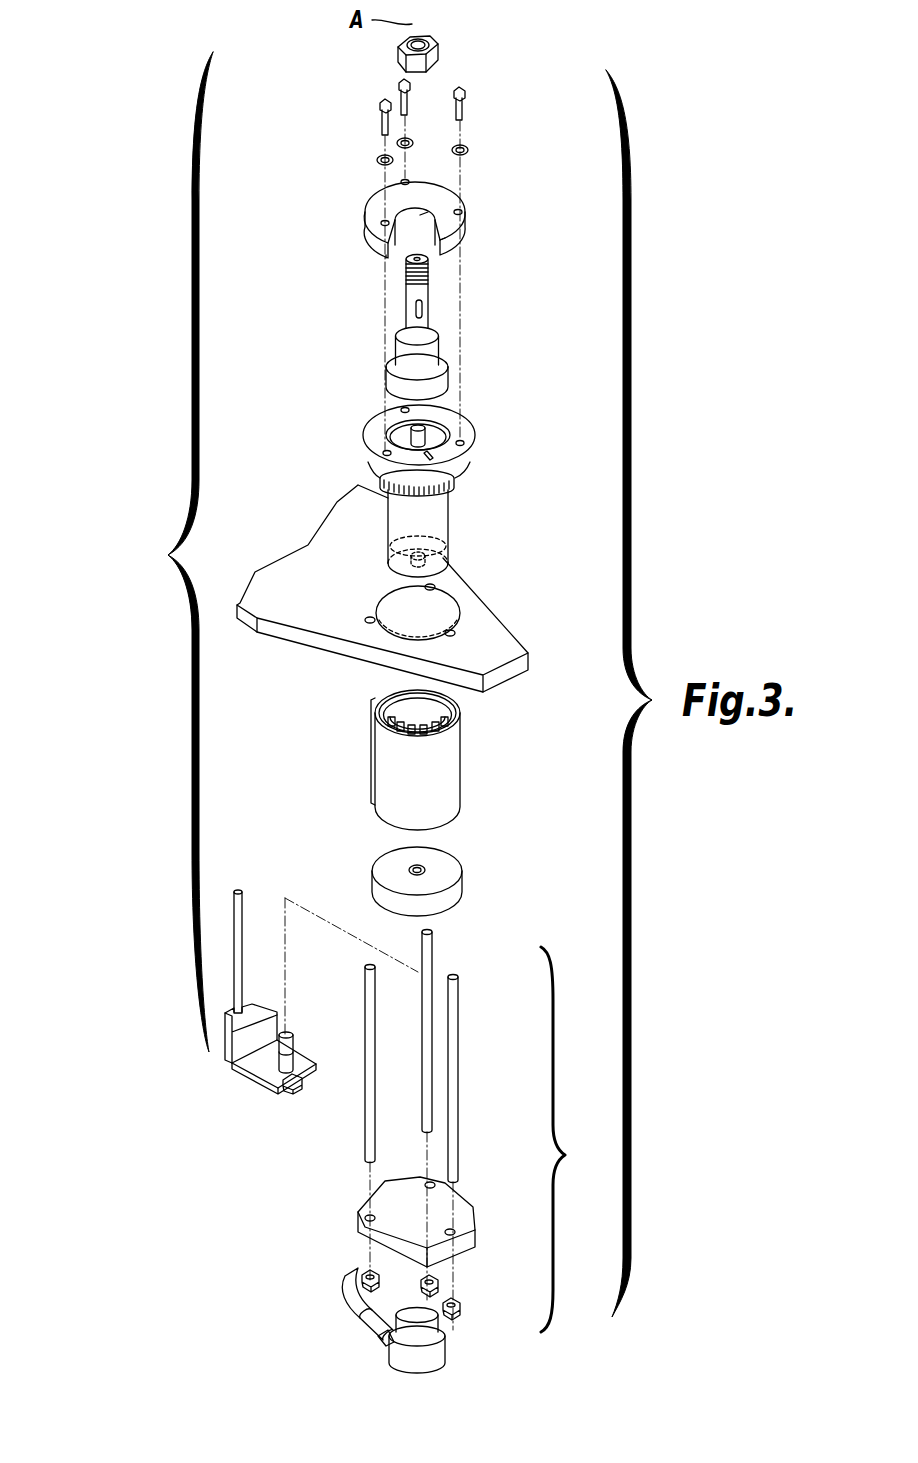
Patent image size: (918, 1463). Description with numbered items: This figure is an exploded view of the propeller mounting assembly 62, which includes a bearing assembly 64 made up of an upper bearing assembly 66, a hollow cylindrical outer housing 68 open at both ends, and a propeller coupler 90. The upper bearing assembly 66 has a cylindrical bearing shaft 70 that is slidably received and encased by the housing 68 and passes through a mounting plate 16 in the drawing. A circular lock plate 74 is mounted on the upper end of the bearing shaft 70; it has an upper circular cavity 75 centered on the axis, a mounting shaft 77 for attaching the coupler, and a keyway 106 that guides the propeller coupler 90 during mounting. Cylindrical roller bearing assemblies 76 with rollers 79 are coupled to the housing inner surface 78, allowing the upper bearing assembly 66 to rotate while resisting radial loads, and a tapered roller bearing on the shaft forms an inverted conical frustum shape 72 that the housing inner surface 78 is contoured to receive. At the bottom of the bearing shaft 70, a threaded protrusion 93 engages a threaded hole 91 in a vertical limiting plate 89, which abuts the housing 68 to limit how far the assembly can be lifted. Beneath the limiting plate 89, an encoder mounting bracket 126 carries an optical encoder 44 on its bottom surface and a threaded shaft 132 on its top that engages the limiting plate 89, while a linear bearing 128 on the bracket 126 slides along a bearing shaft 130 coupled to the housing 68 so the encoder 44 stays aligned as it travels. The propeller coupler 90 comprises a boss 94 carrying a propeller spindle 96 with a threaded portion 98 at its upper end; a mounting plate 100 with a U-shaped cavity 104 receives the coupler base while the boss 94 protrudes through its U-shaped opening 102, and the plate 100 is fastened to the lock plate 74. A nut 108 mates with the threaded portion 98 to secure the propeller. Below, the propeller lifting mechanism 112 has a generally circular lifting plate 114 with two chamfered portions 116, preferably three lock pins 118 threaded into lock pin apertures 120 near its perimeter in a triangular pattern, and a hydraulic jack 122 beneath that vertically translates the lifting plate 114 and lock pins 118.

The mounting plate 16 is at (485, 623).
The optical encoder 44 is at (295, 1090).
The propeller mounting assembly 62 is at (163, 125).
The bearing assembly 64 is at (176, 552).
The upper bearing assembly 66 is at (460, 478).
The outer housing 68 is at (416, 743).
The bearing shaft 70 is at (455, 533).
The conical frustum shape 72 is at (378, 481).
The lock plate 74 is at (406, 430).
The upper circular cavity 75 is at (410, 434).
The cylindrical roller bearing assembly 76 is at (418, 718).
The mounting shaft 77 is at (424, 430).
The housing inner surface 78 is at (374, 695).
The rollers 79 is at (447, 705).
The vertical limiting plate 89 is at (409, 866).
The propeller coupler 90 is at (455, 344).
The threaded hole 91 is at (425, 869).
The threaded protrusion 93 is at (428, 560).
The boss 94 is at (405, 348).
The propeller spindle 96 is at (361, 285).
The threaded portion 98 is at (409, 272).
The mounting plate 100 is at (378, 197).
The U-shaped opening 102 is at (432, 216).
The U-shaped cavity 104 is at (450, 245).
The keyway 106 is at (434, 457).
The nut 108 is at (407, 60).
The propeller lifting mechanism 112 is at (573, 1139).
The lifting plate 114 is at (408, 1201).
The chamfered portions 116 is at (385, 1247).
The lock pins 118 is at (434, 946).
The lock pin apertures 120 is at (435, 1185).
The hydraulic jack 122 is at (389, 1341).
The encoder mounting bracket 126 is at (268, 1063).
The linear bearing 128 is at (265, 1071).
The bearing shaft 130 is at (242, 893).
The shaft 132 is at (291, 1052).